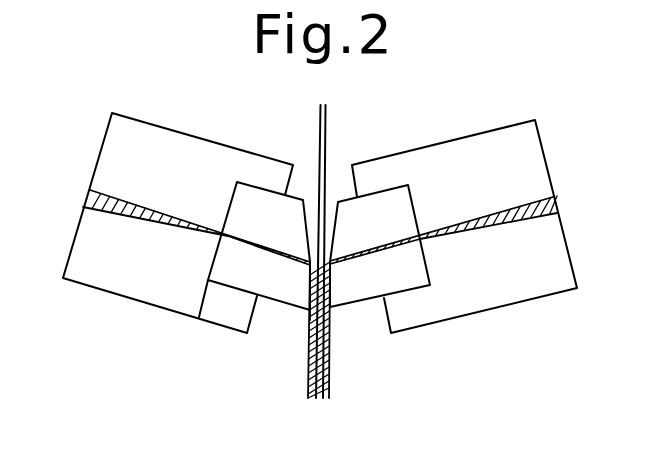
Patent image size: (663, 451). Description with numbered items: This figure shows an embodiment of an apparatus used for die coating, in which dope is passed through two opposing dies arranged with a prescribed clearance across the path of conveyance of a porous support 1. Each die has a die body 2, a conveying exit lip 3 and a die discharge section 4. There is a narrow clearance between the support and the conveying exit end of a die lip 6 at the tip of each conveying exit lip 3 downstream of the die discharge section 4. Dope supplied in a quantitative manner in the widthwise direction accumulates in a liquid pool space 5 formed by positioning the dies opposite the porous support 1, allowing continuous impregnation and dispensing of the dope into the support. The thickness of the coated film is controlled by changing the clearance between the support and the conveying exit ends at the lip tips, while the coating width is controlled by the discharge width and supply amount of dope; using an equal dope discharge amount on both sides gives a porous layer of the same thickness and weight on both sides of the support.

The porous support 1 is at (326, 144).
The die body 2 is at (128, 145).
The conveying exit lip 3 is at (233, 273).
The die discharge section 4 is at (330, 263).
The liquid pool space 5 is at (332, 302).
The conveying exit end of a die lip 6 is at (310, 309).